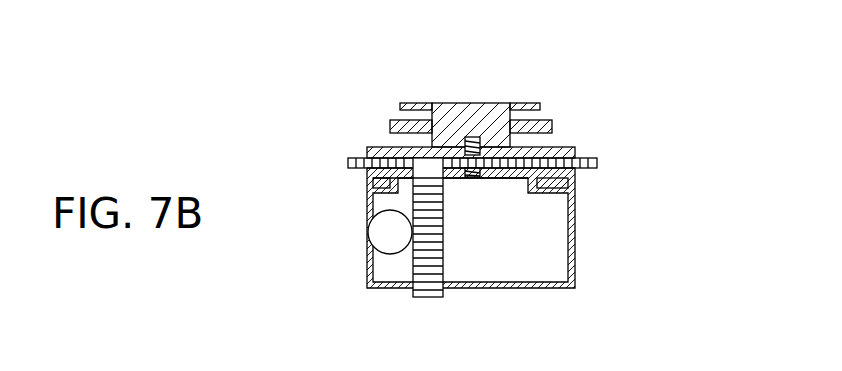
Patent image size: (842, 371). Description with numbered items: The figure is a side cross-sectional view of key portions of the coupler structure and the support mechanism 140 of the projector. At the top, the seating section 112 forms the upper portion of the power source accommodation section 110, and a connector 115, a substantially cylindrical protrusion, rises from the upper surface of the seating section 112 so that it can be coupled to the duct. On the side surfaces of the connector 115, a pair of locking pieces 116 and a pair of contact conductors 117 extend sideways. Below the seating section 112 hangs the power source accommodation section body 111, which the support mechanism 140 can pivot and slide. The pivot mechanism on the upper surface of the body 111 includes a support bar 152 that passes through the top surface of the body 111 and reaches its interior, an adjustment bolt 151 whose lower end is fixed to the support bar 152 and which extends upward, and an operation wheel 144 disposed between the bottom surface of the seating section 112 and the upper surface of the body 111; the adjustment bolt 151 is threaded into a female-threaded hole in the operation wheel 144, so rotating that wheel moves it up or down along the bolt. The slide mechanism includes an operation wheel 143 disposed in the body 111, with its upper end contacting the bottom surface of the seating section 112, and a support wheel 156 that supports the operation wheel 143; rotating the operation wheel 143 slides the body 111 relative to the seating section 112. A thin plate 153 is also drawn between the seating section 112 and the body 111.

The power source accommodation section 110 is at (292, 113).
The power source accommodation section body 111 is at (367, 213).
The seating section 112 is at (367, 148).
The connector 115 is at (493, 103).
The locking pieces 116 is at (552, 128).
The contact conductors 117 is at (540, 107).
The support mechanism 140 is at (643, 153).
The operation wheel 143 is at (430, 297).
The operation wheel 144 is at (597, 163).
The adjustment bolt 151 is at (472, 193).
The support bar 152 is at (575, 193).
The thin plate 153 is at (570, 146).
The support wheel 156 is at (377, 288).